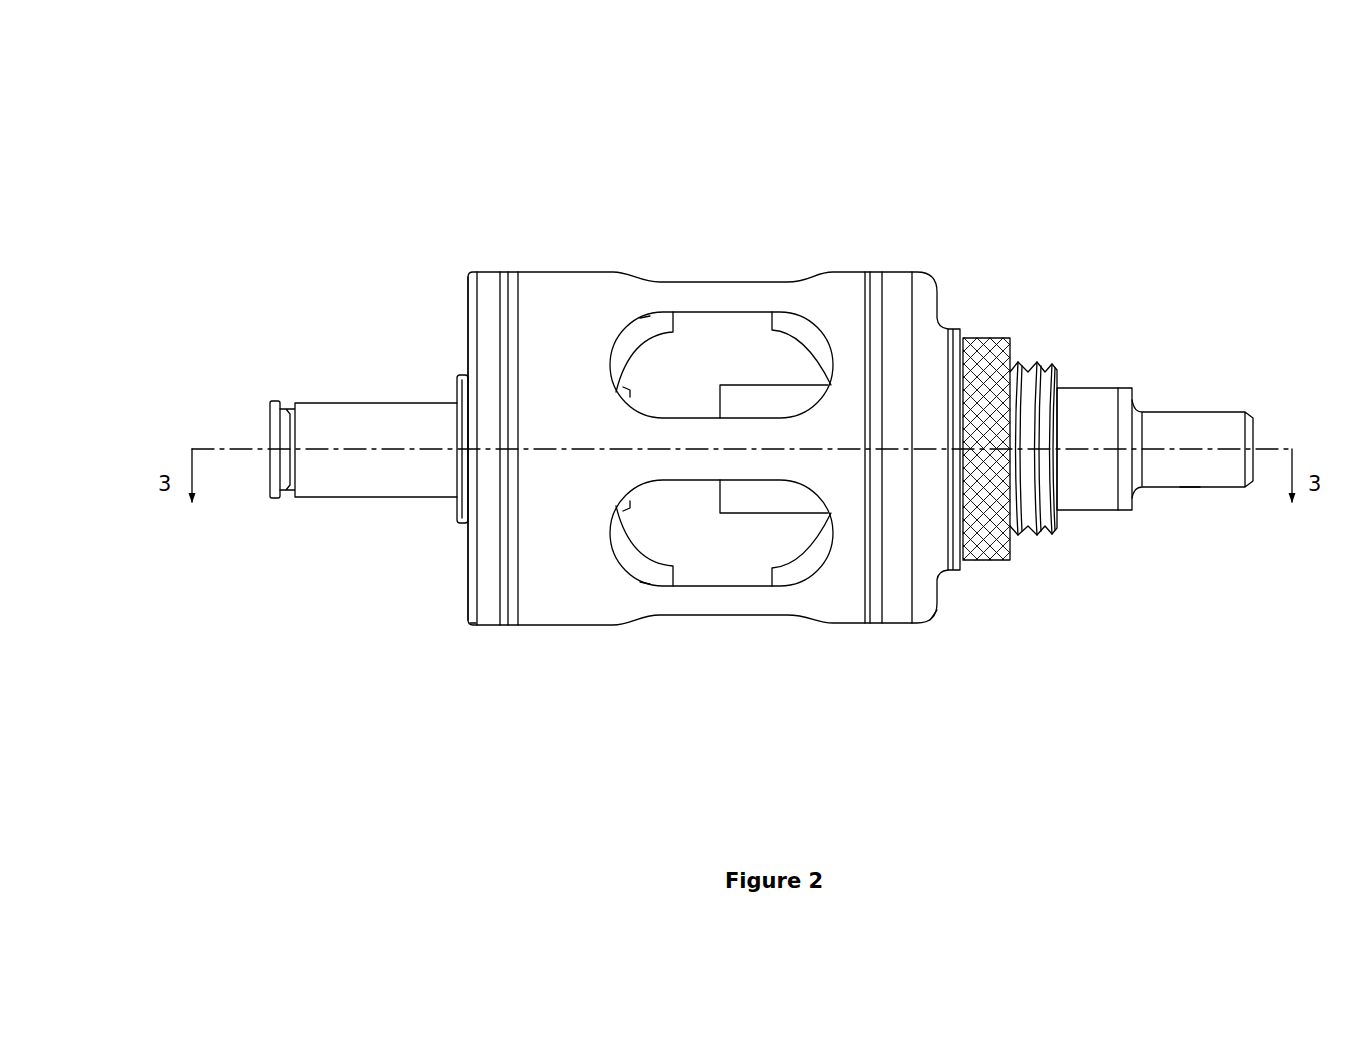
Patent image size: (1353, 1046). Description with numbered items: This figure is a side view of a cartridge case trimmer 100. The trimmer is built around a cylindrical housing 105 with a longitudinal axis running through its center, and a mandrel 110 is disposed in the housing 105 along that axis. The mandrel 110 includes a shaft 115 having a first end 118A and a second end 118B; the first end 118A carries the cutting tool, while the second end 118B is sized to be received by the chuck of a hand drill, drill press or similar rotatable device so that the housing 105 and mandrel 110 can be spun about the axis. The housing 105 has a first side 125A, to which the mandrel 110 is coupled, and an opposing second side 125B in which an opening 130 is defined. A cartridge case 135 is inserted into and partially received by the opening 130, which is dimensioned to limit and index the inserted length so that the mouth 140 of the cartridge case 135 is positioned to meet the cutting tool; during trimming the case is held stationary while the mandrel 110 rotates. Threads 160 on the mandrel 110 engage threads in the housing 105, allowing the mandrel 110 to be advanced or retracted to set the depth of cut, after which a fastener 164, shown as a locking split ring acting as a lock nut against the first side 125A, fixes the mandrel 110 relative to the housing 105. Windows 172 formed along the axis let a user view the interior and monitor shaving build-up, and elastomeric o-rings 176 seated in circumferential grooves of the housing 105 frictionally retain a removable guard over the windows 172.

The cartridge case trimmer 100 is at (890, 118).
The cylindrical housing 105 is at (925, 272).
The mandrel 110 is at (1087, 385).
The shaft 115 is at (1158, 408).
The first end 118A is at (727, 383).
The second end 118B is at (1190, 495).
The first side 125A is at (937, 610).
The second side 125B is at (470, 628).
The opening 130 is at (440, 510).
The cartridge case 135 is at (370, 400).
The mouth 140 is at (663, 413).
The threads 160 is at (1020, 360).
The fastener 164 is at (985, 337).
The windows 172 is at (770, 360).
The elastomeric o-rings 176 is at (512, 630).